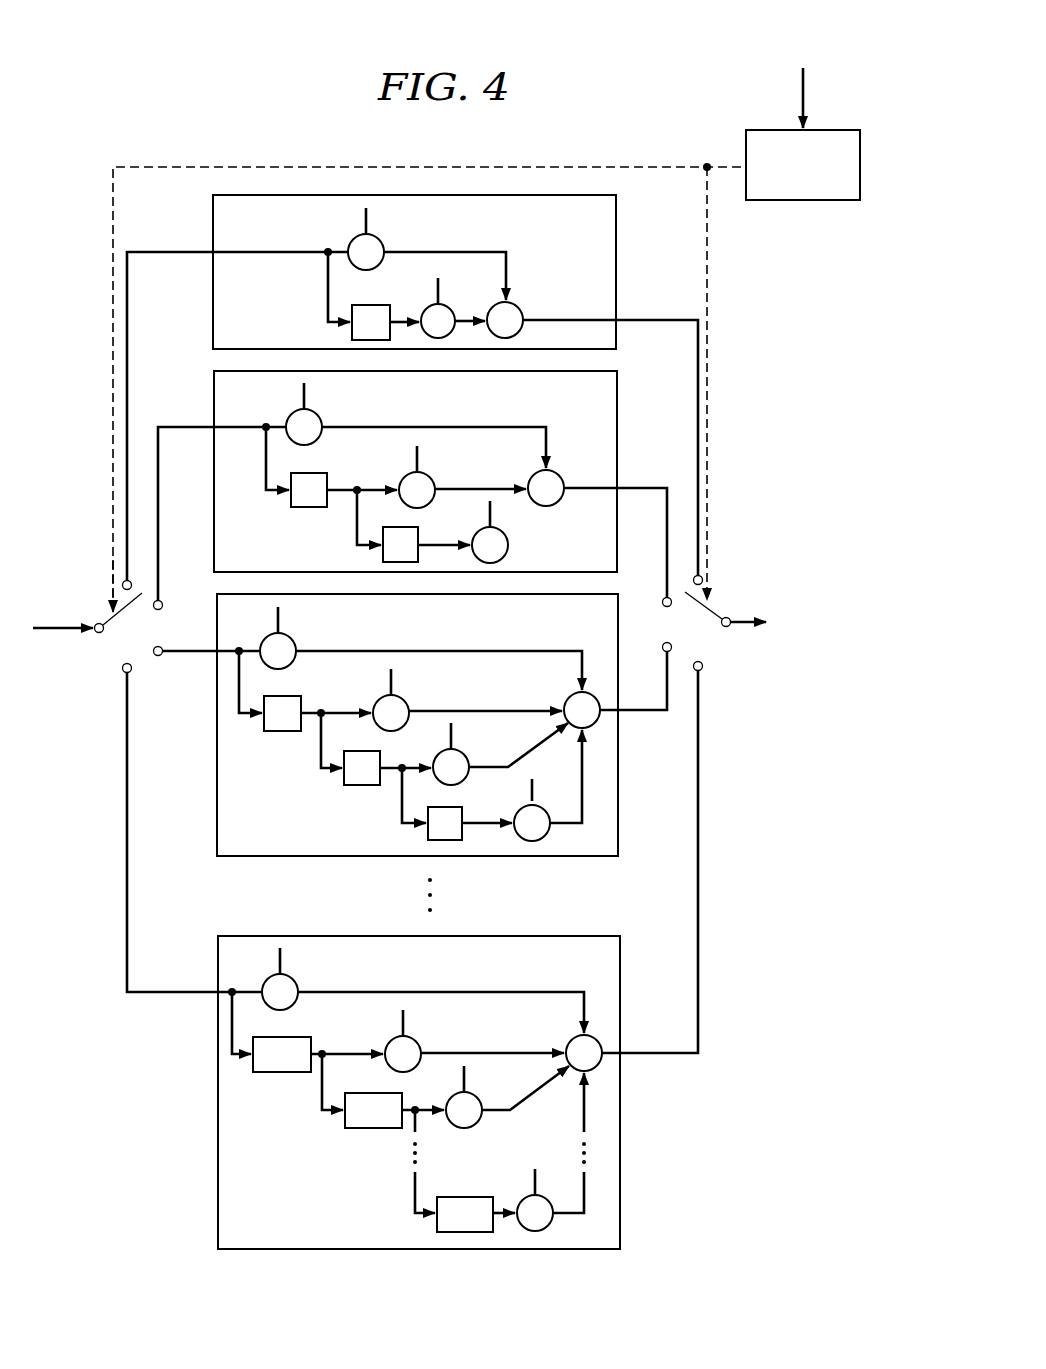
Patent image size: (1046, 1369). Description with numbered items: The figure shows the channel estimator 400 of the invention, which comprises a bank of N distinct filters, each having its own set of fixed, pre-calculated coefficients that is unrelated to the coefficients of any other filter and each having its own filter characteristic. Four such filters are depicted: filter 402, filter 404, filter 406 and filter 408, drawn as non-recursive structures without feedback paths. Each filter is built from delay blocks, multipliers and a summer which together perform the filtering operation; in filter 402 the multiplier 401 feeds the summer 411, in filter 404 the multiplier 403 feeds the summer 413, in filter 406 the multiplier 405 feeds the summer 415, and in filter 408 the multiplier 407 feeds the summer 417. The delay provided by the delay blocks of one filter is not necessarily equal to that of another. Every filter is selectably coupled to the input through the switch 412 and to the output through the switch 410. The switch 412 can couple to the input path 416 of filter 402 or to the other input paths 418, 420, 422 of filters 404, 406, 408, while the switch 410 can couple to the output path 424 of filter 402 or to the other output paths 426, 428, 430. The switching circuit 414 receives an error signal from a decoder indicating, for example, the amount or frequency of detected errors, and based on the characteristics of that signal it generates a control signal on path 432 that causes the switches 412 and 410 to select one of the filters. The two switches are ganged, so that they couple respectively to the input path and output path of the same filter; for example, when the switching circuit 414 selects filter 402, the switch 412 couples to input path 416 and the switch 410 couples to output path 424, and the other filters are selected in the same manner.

The adaptive filter system 400 is at (252, 146).
The multiplier 401 is at (426, 310).
The filter 402 is at (378, 272).
The multiplier 403 is at (396, 480).
The filter 404 is at (392, 471).
The multiplier 405 is at (374, 702).
The filter 406 is at (388, 725).
The multiplier 407 is at (386, 1042).
The filter 408 is at (419, 1068).
The switch 410 is at (714, 628).
The summer 411 is at (521, 304).
The switch 412 is at (107, 636).
The summer 413 is at (558, 470).
The switching circuit 414 is at (802, 202).
The summer 415 is at (566, 702).
The input path 416 is at (147, 258).
The summer 417 is at (568, 1044).
The input path 418 is at (172, 422).
The input path 420 is at (200, 657).
The input path 422 is at (178, 988).
The output path 424 is at (638, 318).
The output path 426 is at (642, 486).
The output path 428 is at (638, 718).
The output path 430 is at (664, 1050).
The path 432 is at (633, 164).